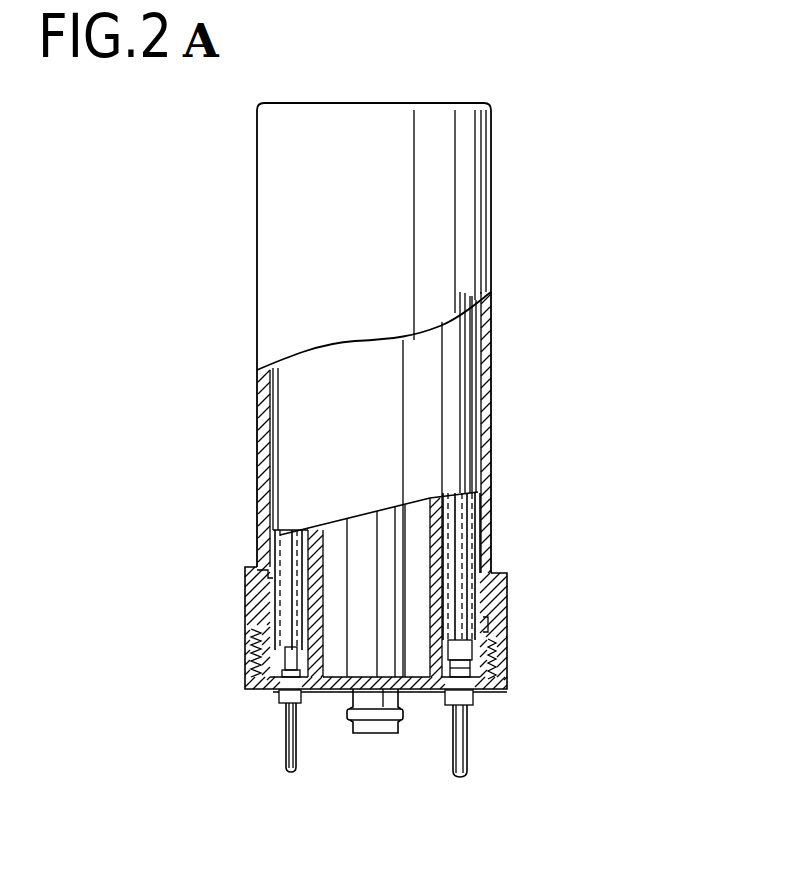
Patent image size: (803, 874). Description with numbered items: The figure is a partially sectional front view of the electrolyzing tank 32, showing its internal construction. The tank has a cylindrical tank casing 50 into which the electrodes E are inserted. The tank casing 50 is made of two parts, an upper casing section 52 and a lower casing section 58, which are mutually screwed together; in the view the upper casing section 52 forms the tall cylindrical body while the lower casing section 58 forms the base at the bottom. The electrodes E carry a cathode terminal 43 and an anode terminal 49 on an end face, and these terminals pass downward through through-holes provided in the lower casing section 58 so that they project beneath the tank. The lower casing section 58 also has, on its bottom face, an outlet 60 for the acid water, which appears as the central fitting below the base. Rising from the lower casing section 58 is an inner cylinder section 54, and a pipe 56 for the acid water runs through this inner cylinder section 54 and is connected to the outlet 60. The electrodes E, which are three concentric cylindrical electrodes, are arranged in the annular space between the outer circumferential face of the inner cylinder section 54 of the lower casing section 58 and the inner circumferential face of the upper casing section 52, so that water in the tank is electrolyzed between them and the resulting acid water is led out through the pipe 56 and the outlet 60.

The electrolyzing tank 32 is at (606, 92).
The tank casing 50 is at (493, 235).
The upper casing section 52 is at (257, 422).
The electrodes E is at (453, 412).
The inner cylinder section 54 is at (460, 557).
The pipe for the acid water 56 is at (357, 590).
The lower casing section 58 is at (250, 686).
The anode terminal 49 is at (285, 752).
The cathode terminal 43 is at (467, 742).
The outlet for the acid water 60 is at (368, 727).